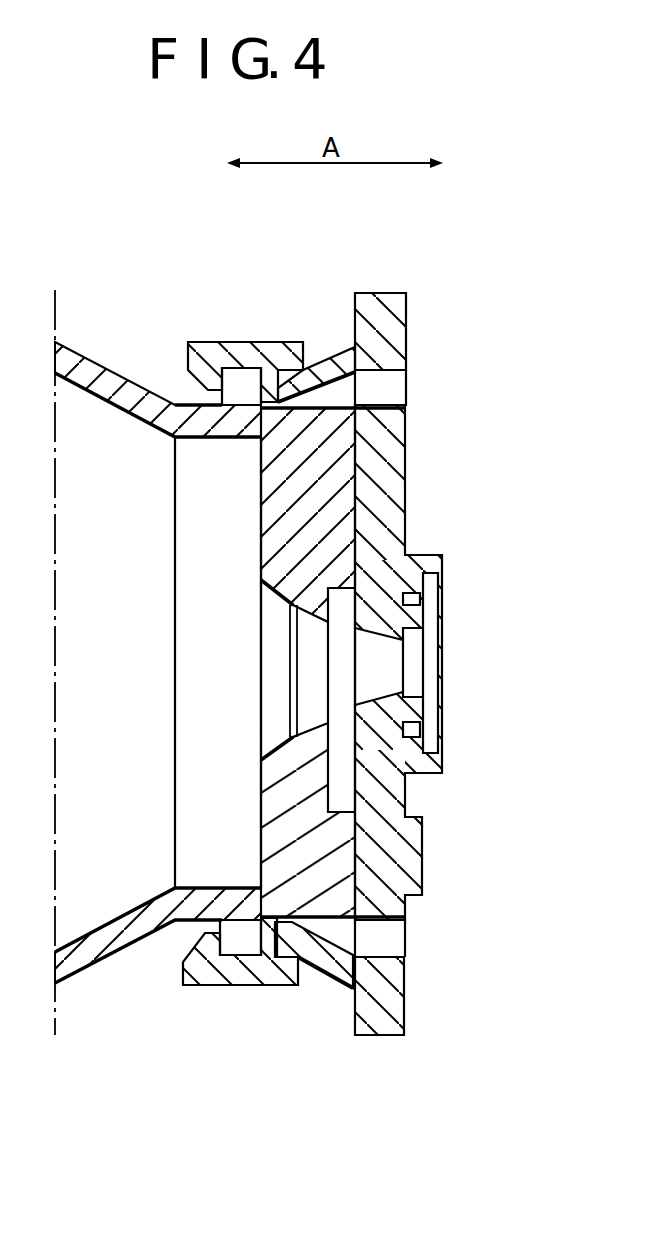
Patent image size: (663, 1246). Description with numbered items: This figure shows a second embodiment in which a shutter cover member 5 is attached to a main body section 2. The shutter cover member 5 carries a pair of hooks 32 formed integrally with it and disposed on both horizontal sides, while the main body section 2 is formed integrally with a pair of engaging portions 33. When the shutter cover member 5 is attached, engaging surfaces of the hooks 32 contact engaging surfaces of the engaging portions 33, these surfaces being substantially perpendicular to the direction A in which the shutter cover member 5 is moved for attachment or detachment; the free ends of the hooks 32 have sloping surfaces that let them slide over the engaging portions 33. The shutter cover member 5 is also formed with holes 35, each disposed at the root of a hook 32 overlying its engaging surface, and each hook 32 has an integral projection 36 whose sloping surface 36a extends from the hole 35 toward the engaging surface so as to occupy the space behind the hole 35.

The main body section 2 is at (123, 918).
The shutter cover member 5 is at (385, 804).
The hook 32 is at (210, 338).
The engaging portion 33 is at (238, 394).
The hole 35 is at (400, 387).
The projection 36 is at (328, 363).
The sloping surface 36a is at (396, 400).